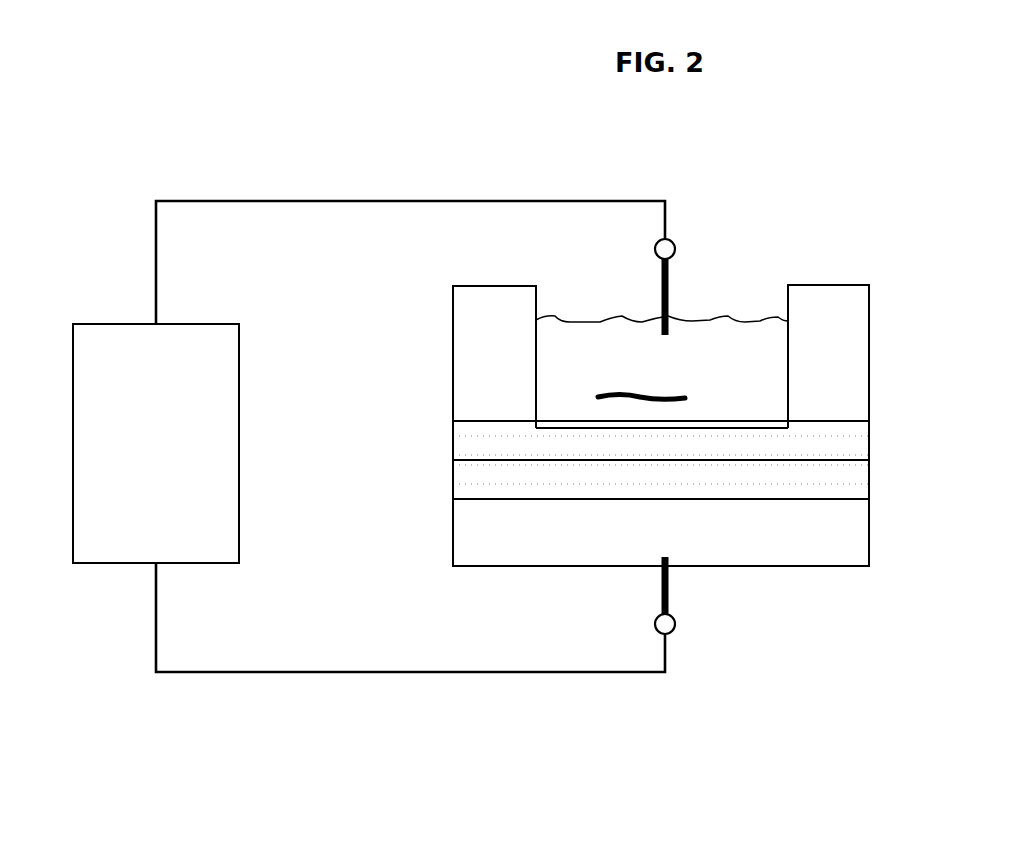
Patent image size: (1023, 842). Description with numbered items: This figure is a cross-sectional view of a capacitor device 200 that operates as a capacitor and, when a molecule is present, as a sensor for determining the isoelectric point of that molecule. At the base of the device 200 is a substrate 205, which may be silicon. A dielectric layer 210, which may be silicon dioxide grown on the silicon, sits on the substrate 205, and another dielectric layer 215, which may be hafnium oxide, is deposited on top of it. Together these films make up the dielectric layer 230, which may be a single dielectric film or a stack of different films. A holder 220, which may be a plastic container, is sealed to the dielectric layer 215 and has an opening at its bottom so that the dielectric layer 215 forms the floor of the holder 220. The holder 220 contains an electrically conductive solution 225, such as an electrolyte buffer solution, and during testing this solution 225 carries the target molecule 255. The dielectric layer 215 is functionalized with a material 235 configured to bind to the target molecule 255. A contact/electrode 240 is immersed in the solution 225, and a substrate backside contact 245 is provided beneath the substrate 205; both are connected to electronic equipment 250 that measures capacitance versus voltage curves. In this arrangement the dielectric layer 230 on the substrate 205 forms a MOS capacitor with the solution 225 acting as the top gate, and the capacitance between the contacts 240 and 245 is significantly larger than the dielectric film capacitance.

The capacitor device 200 is at (950, 93).
The substrate 205 is at (478, 543).
The dielectric layer 210 is at (453, 490).
The dielectric layer 215 is at (460, 437).
The holder 220 is at (460, 353).
The electrically conductive solution 225 is at (716, 353).
The dielectric layer 230 is at (650, 482).
The functionalized material 235 is at (753, 424).
The contact/electrode 240 is at (669, 283).
The substrate backside contact 245 is at (669, 588).
The electronic equipment 250 is at (145, 415).
The target molecule 255 is at (640, 400).